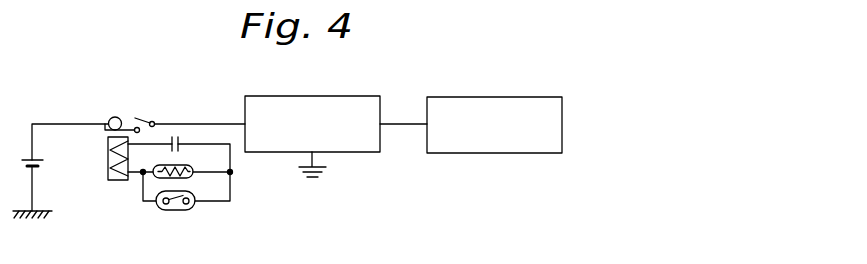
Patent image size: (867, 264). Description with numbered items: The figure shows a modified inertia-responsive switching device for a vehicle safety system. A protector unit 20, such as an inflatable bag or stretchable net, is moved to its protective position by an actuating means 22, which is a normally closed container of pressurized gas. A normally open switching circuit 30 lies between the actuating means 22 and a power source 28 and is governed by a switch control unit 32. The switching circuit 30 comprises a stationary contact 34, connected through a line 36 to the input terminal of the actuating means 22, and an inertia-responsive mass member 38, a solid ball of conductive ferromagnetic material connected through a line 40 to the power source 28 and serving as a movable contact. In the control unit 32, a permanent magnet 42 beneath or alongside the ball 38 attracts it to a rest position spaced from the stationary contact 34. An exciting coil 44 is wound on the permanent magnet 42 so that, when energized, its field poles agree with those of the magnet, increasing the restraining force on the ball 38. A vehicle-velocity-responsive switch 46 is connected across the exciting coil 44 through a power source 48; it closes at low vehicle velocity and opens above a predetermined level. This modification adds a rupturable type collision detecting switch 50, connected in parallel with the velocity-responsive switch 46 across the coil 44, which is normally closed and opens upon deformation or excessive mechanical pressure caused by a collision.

The protector unit 20 is at (493, 97).
The actuating means 22 is at (335, 96).
The power source 28 is at (44, 163).
The switching circuit 30 is at (126, 114).
The switch control unit 32 is at (136, 183).
The stationary contact 34 is at (143, 117).
The line 36 is at (217, 122).
The inertia-responsive mass member 38 is at (111, 119).
The line 40 is at (65, 123).
The permanent magnet 42 is at (118, 181).
The exciting coil 44 is at (108, 153).
The vehicle-velocity-responsive switch 46 is at (197, 208).
The power source 48 is at (179, 152).
The rupturable type collision detecting switch 50 is at (195, 177).